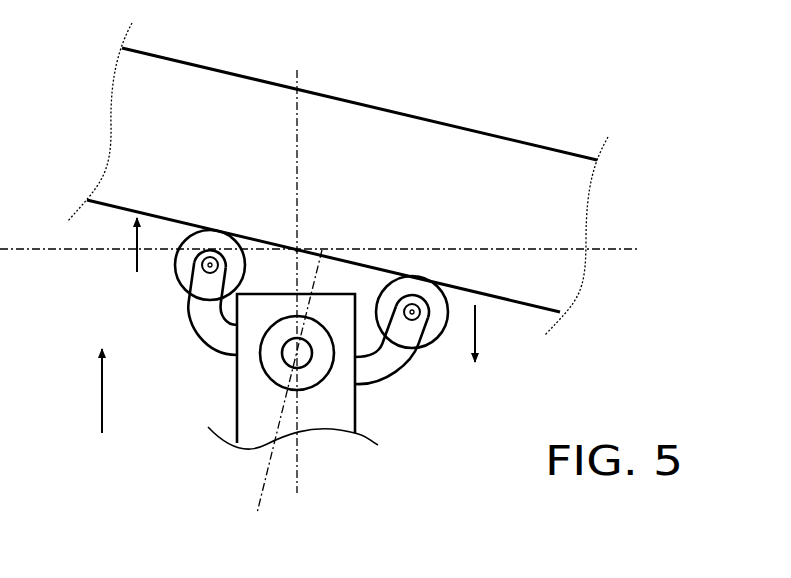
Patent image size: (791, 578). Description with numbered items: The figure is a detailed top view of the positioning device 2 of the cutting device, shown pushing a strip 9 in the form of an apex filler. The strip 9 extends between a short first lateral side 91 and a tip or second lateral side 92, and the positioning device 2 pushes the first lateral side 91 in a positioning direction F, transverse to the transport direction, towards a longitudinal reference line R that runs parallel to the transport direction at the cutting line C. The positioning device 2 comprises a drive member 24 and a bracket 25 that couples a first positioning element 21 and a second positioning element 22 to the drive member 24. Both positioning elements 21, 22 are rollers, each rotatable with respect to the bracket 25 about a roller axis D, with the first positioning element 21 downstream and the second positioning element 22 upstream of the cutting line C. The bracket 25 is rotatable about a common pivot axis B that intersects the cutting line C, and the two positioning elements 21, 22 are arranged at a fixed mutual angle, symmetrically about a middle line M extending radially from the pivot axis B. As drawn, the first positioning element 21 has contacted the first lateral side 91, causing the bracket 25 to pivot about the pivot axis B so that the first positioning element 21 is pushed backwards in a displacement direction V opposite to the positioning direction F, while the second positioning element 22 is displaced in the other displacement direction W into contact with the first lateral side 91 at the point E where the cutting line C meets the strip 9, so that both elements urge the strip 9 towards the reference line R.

The positioning device 2 is at (192, 421).
The strip 9 is at (467, 153).
The first lateral side 91 is at (512, 303).
The second lateral side 92 is at (215, 68).
The first positioning element 21 is at (435, 327).
The second positioning element 22 is at (185, 265).
The drive member 24 is at (268, 411).
The bracket 25 is at (393, 368).
The pivot axis B is at (297, 357).
The cutting line C is at (298, 85).
The roller axis D is at (210, 265).
The contact point E is at (297, 250).
The middle line M is at (315, 282).
The reference line R is at (622, 252).
The positioning direction F is at (89, 391).
The first displacement direction V is at (486, 333).
The displacement direction W is at (123, 247).